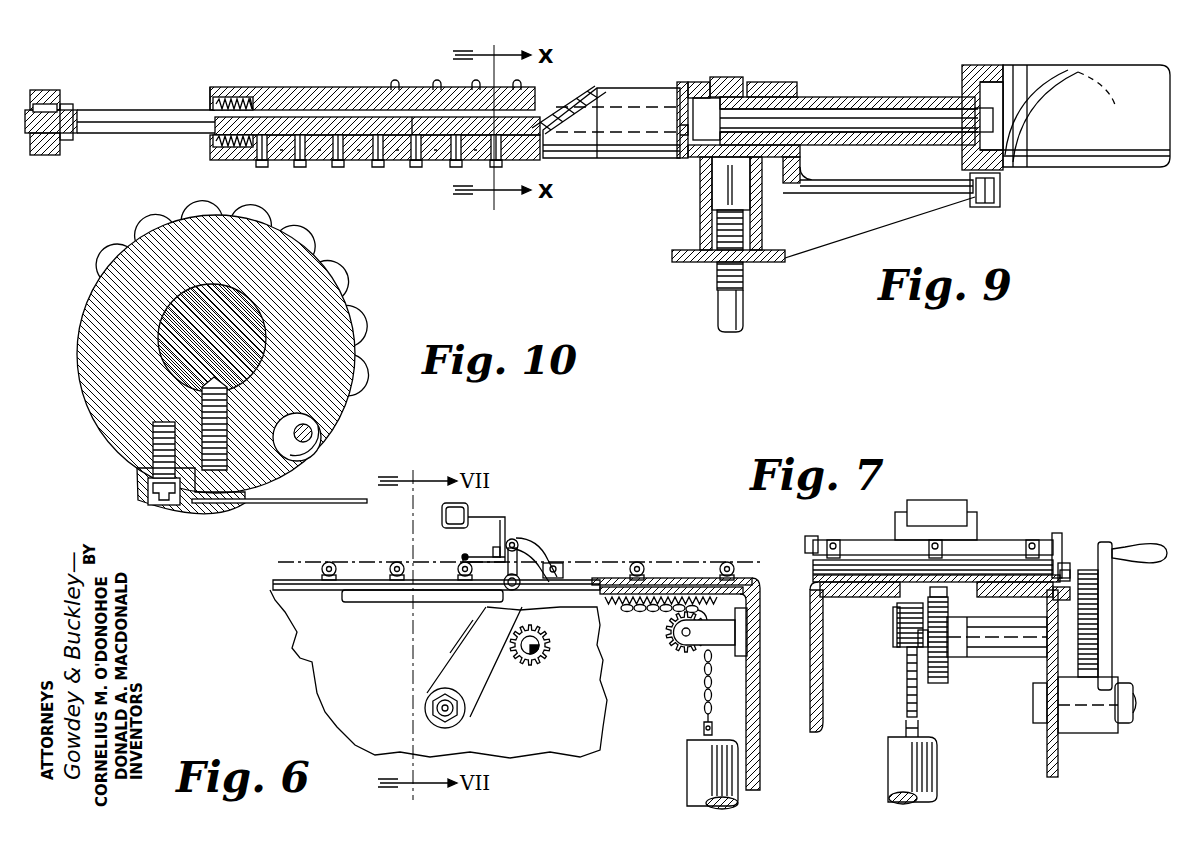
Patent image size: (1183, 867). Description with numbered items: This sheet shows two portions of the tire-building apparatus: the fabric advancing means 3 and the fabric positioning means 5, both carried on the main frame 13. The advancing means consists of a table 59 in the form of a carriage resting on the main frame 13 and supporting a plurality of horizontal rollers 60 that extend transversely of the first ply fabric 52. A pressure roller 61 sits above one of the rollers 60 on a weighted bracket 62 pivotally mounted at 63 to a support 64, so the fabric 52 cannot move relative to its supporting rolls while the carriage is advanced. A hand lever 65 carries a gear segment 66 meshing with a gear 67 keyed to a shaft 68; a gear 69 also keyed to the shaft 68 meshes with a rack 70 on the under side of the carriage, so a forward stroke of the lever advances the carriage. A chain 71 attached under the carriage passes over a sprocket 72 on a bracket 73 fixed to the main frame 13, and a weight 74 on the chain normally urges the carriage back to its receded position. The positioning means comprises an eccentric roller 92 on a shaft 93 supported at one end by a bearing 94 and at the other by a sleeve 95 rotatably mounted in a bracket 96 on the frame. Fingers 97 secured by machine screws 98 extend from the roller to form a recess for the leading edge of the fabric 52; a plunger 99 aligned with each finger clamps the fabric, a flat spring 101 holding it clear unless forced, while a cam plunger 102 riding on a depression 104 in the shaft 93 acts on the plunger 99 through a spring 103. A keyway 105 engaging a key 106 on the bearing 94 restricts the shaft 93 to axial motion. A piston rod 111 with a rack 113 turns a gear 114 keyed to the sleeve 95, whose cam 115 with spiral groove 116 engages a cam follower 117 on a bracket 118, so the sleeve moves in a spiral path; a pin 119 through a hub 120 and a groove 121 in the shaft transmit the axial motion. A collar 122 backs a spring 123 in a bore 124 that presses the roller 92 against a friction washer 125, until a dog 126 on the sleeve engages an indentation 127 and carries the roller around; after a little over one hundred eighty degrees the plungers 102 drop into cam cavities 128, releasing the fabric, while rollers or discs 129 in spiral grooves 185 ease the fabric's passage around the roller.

In FIG. 6, the fabric advancing means 3 is at (598, 558).
In FIG. 9, the fabric positioning means 5 is at (618, 168).
In FIG. 6, the main frame 13 is at (298, 635).
In FIG. 7, the main frame 13 is at (1047, 766).
In FIG. 10, the first ply fabric 52 is at (262, 505).
In FIG. 6, the first ply fabric 52 is at (680, 560).
In FIG. 6, the table 59 is at (697, 578).
In FIG. 7, the table 59 is at (1070, 576).
In FIG. 6, the horizontal rollers 60 is at (729, 562).
In FIG. 7, the horizontal rollers 60 is at (1000, 557).
In FIG. 6, the pressure roller 61 is at (464, 555).
In FIG. 7, the pressure roller 61 is at (978, 552).
In FIG. 6, the weighted bracket 62 is at (478, 517).
In FIG. 7, the weighted bracket 62 is at (942, 500).
In FIG. 6, the pivotal mounting 63 is at (517, 540).
In FIG. 7, the pivotal mounting 63 is at (1055, 533).
In FIG. 6, the support 64 is at (536, 556).
In FIG. 7, the support 64 is at (1066, 562).
In FIG. 7, the hand lever 65 is at (1150, 542).
In FIG. 6, the gear segment 66 is at (590, 682).
In FIG. 7, the gear segment 66 is at (1100, 598).
In FIG. 6, the gear 67 is at (534, 666).
In FIG. 7, the gear 67 is at (1100, 642).
In FIG. 6, the shaft 68 is at (508, 665).
In FIG. 7, the gear 69 is at (952, 680).
In FIG. 7, the rack 70 is at (948, 597).
In FIG. 6, the chain 71 is at (704, 690).
In FIG. 7, the chain 71 is at (905, 700).
In FIG. 6, the sprocket 72 is at (668, 646).
In FIG. 7, the sprocket 72 is at (900, 655).
In FIG. 6, the bracket 73 is at (742, 631).
In FIG. 7, the bracket 73 is at (893, 626).
In FIG. 6, the weight 74 is at (688, 758).
In FIG. 7, the weight 74 is at (890, 758).
In FIG. 9, the eccentric roller 92 is at (583, 160).
In FIG. 10, the eccentric roller 92 is at (96, 288).
In FIG. 9, the shaft 93 is at (150, 110).
In FIG. 10, the shaft 93 is at (170, 333).
In FIG. 9, the bearing 94 is at (34, 156).
In FIG. 9, the sleeve 95 is at (850, 96).
In FIG. 9, the bracket 96 is at (766, 82).
In FIG. 9, the fingers 97 is at (258, 167).
In FIG. 10, the fingers 97 is at (214, 519).
In FIG. 10, the machine screws 98 is at (148, 492).
In FIG. 9, the plunger 99 is at (226, 160).
In FIG. 10, the plunger 99 is at (232, 478).
In FIG. 9, the flat spring 101 is at (380, 168).
In FIG. 9, the cam plunger 102 is at (419, 168).
In FIG. 10, the cam plunger 102 is at (232, 392).
In FIG. 10, the spring 103 is at (176, 410).
In FIG. 9, the depression 104 is at (413, 118).
In FIG. 10, the depression 104 is at (215, 395).
In FIG. 9, the keyway 105 is at (68, 104).
In FIG. 9, the key 106 is at (45, 90).
In FIG. 9, the piston rod 111 is at (742, 312).
In FIG. 9, the rack 113 is at (745, 278).
In FIG. 9, the gear 114 is at (726, 77).
In FIG. 9, the cam 115 is at (1088, 168).
In FIG. 9, the spiral groove 116 is at (1070, 56).
In FIG. 9, the cam follower 117 is at (1005, 170).
In FIG. 9, the bracket 118 is at (902, 224).
In FIG. 9, the pin 119 is at (980, 104).
In FIG. 9, the hub 120 is at (982, 74).
In FIG. 9, the groove 121 is at (940, 146).
In FIG. 9, the collar 122 is at (208, 95).
In FIG. 9, the spring 123 is at (232, 98).
In FIG. 9, the bore 124 is at (252, 100).
In FIG. 9, the friction washer 125 is at (684, 152).
In FIG. 9, the dog 126 is at (687, 97).
In FIG. 9, the indentation 127 is at (677, 123).
In FIG. 9, the cam cavities 128 is at (312, 87).
In FIG. 10, the cam cavities 128 is at (222, 305).
In FIG. 9, the rollers or discs 129 is at (393, 82).
In FIG. 10, the rollers or discs 129 is at (297, 230).
In FIG. 9, the spiral grooves 185 is at (583, 88).